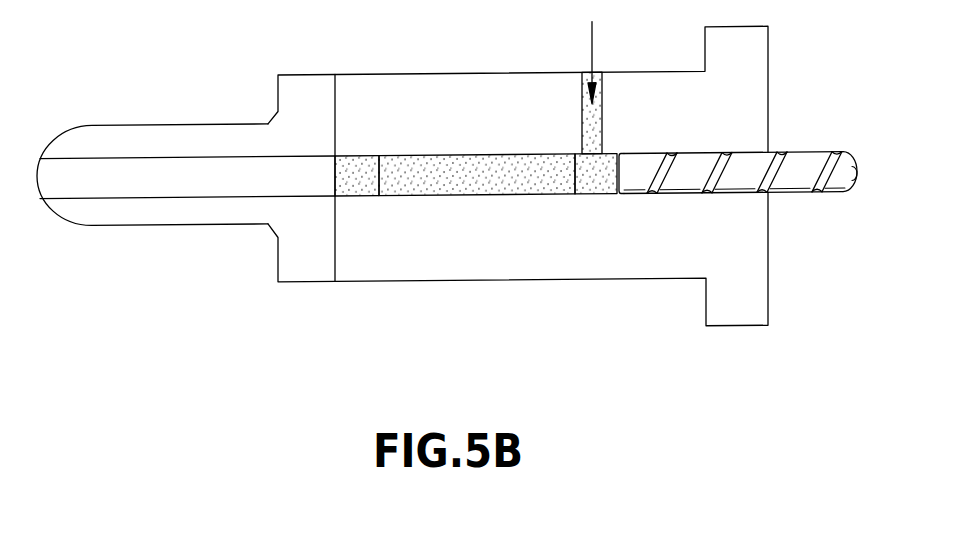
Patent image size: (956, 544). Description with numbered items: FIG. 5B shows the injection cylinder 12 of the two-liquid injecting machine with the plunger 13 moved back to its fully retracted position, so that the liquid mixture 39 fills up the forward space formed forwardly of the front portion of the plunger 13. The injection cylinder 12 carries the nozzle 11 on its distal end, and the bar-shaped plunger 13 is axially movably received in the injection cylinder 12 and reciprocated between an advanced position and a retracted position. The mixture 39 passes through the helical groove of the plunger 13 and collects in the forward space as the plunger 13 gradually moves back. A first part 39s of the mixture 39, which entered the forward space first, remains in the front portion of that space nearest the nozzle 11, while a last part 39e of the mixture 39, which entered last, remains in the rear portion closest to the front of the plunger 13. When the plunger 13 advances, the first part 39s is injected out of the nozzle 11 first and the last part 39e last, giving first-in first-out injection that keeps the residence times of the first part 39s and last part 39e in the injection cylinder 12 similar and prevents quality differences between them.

The nozzle 11 is at (191, 216).
The injection cylinder 12 is at (527, 269).
The plunger 13 is at (797, 180).
The liquid mixture 39 is at (457, 182).
The first part of the mixture 39s is at (363, 182).
The last part of the mixture 39e is at (600, 182).